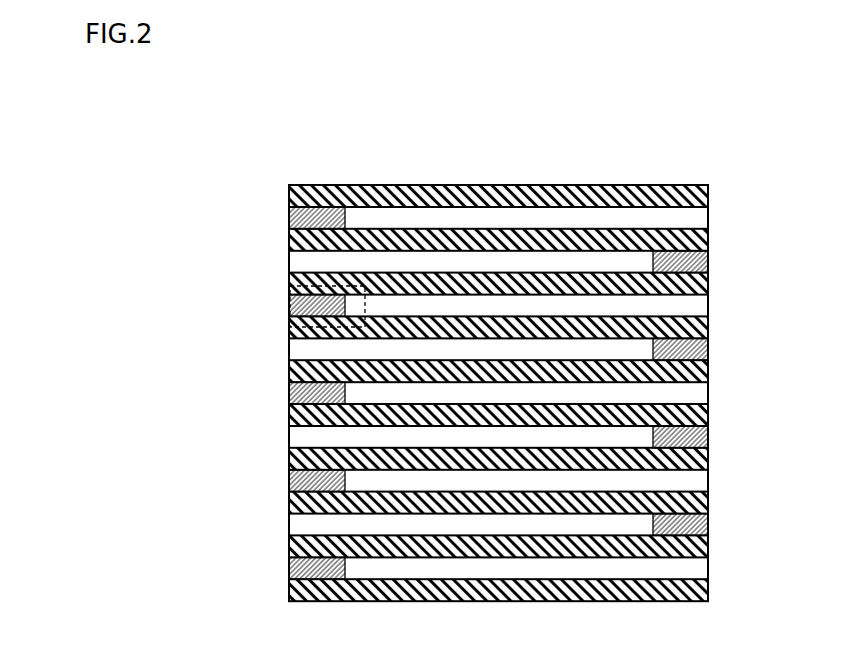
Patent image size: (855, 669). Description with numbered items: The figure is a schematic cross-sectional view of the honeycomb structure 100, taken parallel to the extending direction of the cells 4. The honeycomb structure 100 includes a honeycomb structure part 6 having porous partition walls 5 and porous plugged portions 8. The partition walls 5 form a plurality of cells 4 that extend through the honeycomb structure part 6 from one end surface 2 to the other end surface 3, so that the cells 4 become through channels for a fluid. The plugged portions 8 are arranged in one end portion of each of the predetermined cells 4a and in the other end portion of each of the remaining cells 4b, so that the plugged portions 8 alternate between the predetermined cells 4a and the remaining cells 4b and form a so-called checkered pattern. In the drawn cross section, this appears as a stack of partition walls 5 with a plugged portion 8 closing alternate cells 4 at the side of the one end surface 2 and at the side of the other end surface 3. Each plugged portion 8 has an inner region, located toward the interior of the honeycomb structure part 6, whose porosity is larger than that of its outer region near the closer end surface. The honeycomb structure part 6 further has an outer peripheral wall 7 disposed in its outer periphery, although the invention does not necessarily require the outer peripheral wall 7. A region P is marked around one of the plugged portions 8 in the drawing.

The honeycomb structure 100 is at (762, 140).
The one end surface 2 is at (288, 372).
The other end surface 3 is at (708, 552).
The cells 4 is at (490, 255).
The predetermined cells 4a is at (320, 262).
The remaining cells 4b is at (682, 302).
The partition walls 5 is at (668, 403).
The honeycomb structure part 6 is at (619, 175).
The outer peripheral wall 7 is at (522, 183).
The plugged portions 8 is at (288, 215).
The portion P (enlarged region) P is at (365, 307).